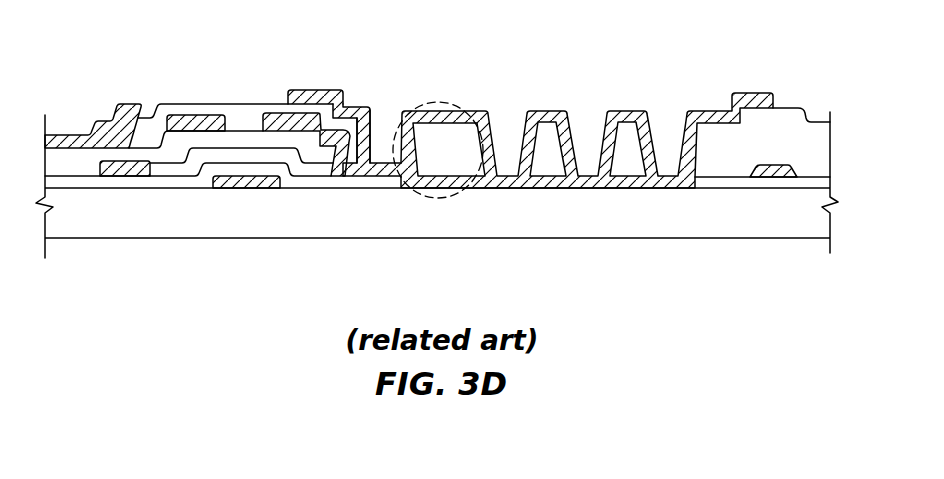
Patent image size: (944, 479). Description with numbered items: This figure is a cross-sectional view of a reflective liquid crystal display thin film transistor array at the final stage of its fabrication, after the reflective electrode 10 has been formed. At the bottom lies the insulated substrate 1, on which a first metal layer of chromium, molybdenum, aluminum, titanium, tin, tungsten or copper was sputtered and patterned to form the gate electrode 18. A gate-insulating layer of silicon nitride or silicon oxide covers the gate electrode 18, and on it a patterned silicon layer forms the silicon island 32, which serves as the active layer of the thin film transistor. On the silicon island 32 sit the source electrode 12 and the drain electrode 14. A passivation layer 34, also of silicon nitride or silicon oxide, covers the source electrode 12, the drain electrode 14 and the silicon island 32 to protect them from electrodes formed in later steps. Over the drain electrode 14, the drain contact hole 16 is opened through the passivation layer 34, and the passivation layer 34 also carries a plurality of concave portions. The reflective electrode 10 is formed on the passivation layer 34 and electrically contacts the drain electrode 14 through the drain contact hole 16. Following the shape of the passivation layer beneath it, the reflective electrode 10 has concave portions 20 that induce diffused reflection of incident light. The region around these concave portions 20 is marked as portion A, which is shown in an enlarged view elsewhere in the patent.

The insulated substrate 1 is at (430, 224).
The gate electrode 18 is at (238, 183).
The source electrode 12 is at (190, 120).
The silicon island 32 is at (244, 155).
The drain electrode 14 is at (285, 118).
The passivation layer 34 is at (310, 100).
The reflective electrode 10 is at (340, 100).
The drain contact hole 16 is at (365, 122).
The portion A is at (447, 107).
The concave portions 20 is at (502, 113).